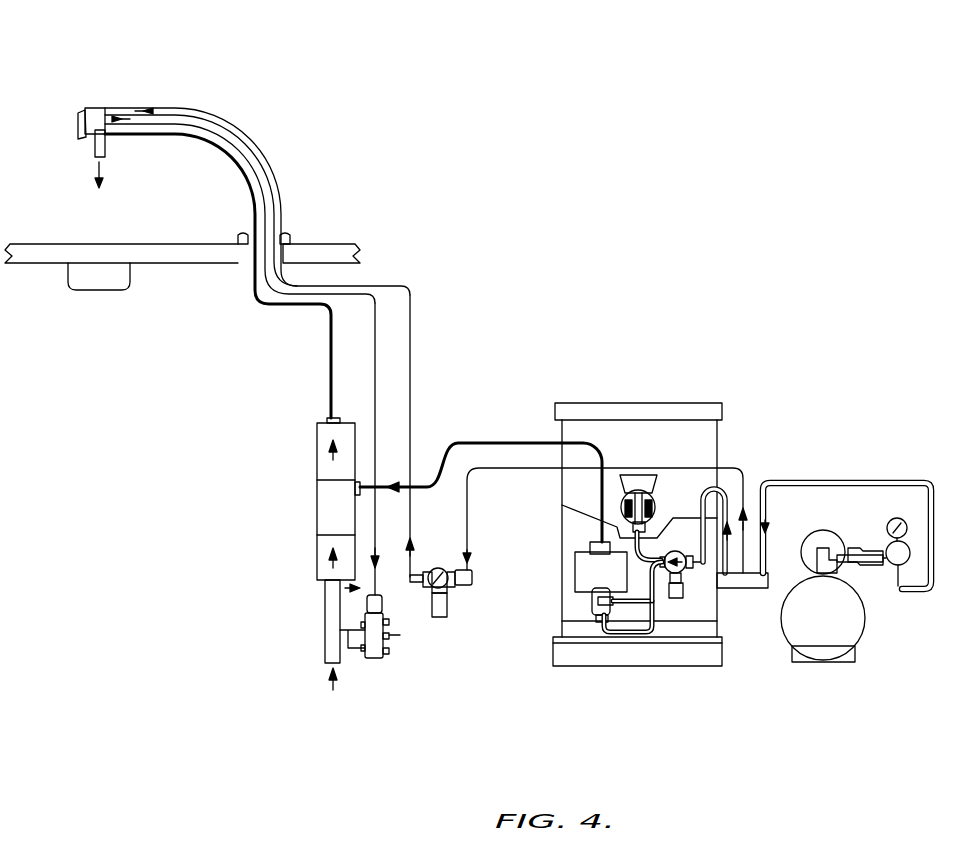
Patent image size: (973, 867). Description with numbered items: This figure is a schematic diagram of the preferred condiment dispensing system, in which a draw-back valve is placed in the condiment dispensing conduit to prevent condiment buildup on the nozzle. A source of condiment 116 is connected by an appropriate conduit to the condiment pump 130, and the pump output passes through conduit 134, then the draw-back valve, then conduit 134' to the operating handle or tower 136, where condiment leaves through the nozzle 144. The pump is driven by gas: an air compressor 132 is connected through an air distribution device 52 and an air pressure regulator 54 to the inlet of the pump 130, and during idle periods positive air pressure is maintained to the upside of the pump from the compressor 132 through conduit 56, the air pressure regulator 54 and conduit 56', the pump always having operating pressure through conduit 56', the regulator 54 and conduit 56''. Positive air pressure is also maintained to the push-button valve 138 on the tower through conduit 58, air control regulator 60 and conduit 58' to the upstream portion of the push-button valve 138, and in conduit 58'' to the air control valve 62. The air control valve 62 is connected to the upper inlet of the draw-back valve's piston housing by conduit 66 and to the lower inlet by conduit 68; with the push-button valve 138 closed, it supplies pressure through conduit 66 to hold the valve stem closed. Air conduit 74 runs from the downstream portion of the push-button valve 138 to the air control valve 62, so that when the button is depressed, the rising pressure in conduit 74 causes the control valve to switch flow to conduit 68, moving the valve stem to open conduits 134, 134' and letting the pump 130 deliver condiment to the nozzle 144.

The operating handle or tower 136 is at (112, 100).
The push-button valve 138 is at (54, 136).
The nozzle 144 is at (93, 158).
The condiment dispensing conduit 134' is at (218, 276).
The air conduit 74 is at (356, 288).
The conduit 58' is at (425, 422).
The condiment dispensing conduit 134 is at (481, 475).
The air control regulator 60 is at (441, 567).
The conduit 66 is at (350, 632).
The conduit 68 is at (352, 667).
The air control valve 62 is at (378, 660).
The conduit 58'' is at (427, 650).
The condiment pump 130 is at (575, 588).
The conduit 58 is at (655, 534).
The source of condiment 116 is at (658, 508).
The conduit 56' is at (755, 512).
The conduit 56 is at (866, 521).
The air distribution device 52 is at (768, 573).
The air pressure regulator 54 is at (683, 598).
The air compressor 132 is at (818, 663).
The conduit 56'' is at (651, 621).